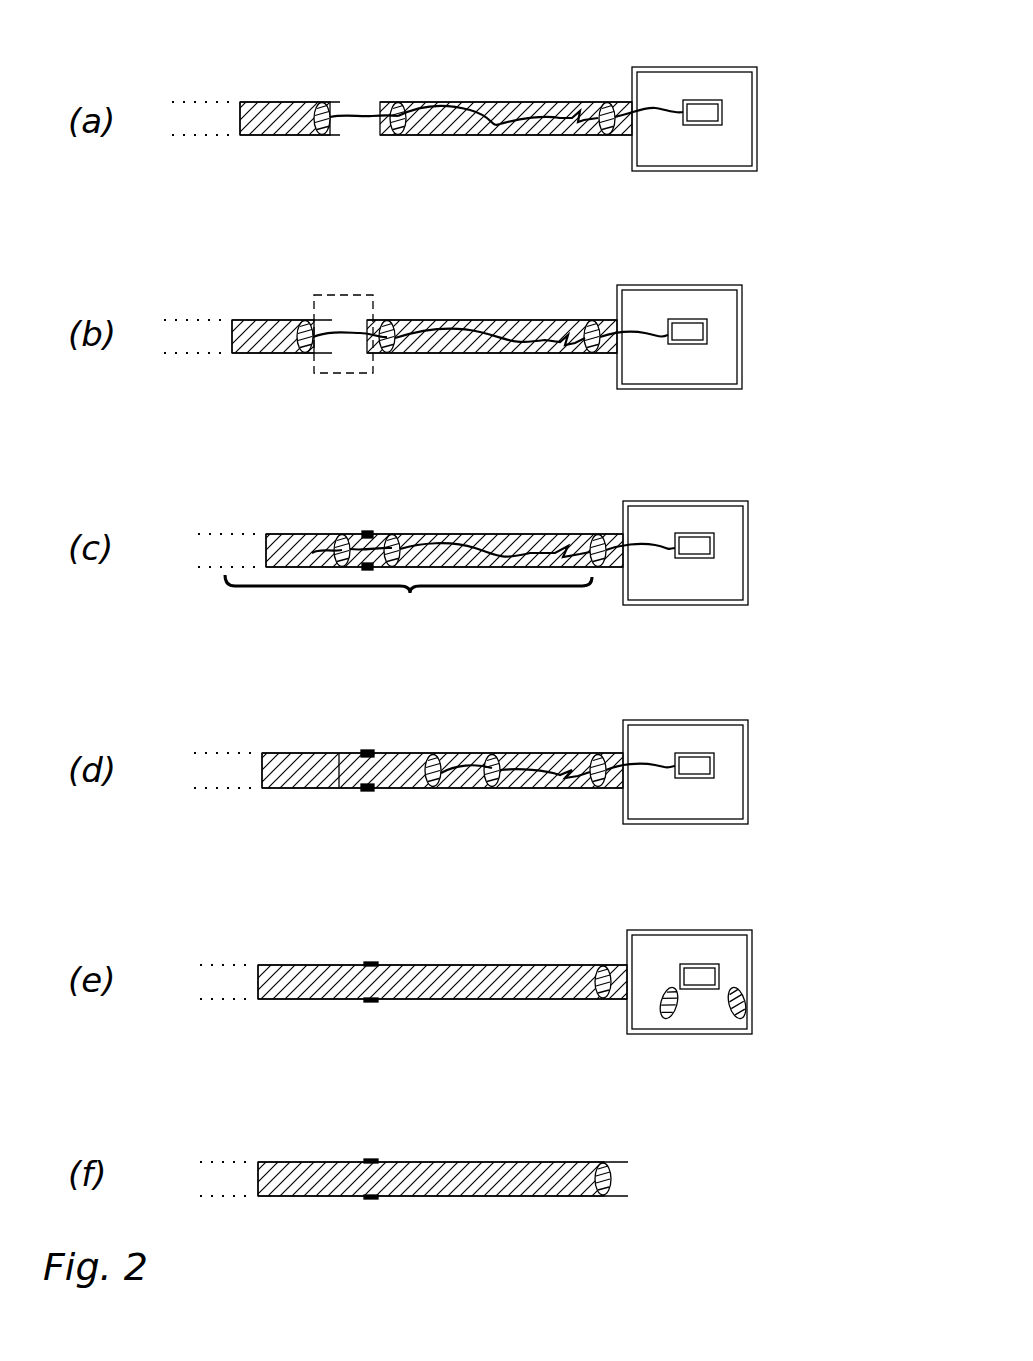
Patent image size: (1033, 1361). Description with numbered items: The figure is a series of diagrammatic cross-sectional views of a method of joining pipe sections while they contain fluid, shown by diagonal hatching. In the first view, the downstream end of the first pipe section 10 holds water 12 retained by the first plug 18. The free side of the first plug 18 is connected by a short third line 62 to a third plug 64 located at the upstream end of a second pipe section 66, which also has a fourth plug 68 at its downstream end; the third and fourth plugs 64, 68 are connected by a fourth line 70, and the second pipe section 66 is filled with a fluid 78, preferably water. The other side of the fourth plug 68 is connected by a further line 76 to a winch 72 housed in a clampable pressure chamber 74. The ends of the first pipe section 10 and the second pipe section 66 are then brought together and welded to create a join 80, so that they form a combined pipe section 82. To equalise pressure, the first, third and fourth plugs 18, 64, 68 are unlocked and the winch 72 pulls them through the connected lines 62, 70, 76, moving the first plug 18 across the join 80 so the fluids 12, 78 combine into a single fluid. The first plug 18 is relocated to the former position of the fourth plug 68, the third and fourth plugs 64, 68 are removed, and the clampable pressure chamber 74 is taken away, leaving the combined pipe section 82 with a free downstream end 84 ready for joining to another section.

The first pipe section 10 is at (416, 229).
The water 12 is at (257, 123).
The first plug 18 is at (317, 135).
The third line 62 is at (352, 110).
The third plug 64 is at (390, 135).
The second pipe section 66 is at (497, 399).
The fourth plug 68 is at (598, 135).
The fourth line 70 is at (498, 127).
The winch 72 is at (712, 127).
The clampable pressure chamber 74 is at (708, 550).
The further line 76 is at (652, 108).
The fluid 78 is at (433, 135).
The join 80 is at (369, 520).
The combined pipe section 82 is at (410, 594).
The downstream end 84 is at (630, 1140).